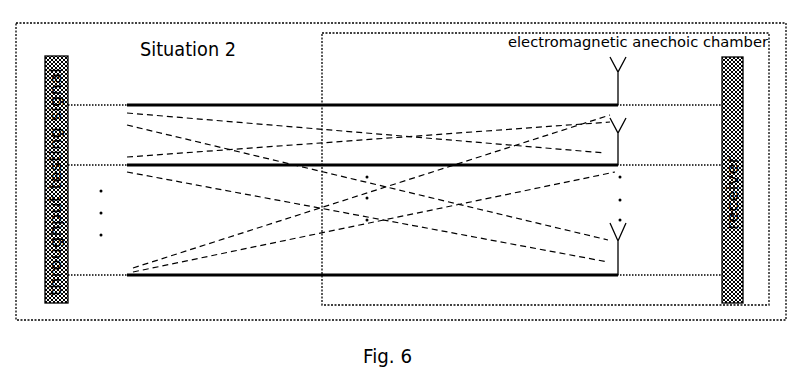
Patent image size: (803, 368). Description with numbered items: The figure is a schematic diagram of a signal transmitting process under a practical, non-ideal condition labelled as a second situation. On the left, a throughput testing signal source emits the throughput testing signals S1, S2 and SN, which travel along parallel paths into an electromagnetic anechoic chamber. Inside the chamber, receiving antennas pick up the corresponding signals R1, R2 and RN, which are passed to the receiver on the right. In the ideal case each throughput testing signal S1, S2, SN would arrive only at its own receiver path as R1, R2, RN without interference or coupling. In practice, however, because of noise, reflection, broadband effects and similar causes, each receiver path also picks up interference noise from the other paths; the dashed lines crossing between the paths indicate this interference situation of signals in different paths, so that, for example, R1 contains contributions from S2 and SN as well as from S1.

The first throughput testing signal S1 is at (395, 98).
The second throughput testing signal S2 is at (395, 158).
The Nth throughput testing signal SN is at (395, 267).
The first received signal R1 is at (640, 81).
The second received signal R2 is at (640, 141).
The Nth received signal RN is at (639, 249).